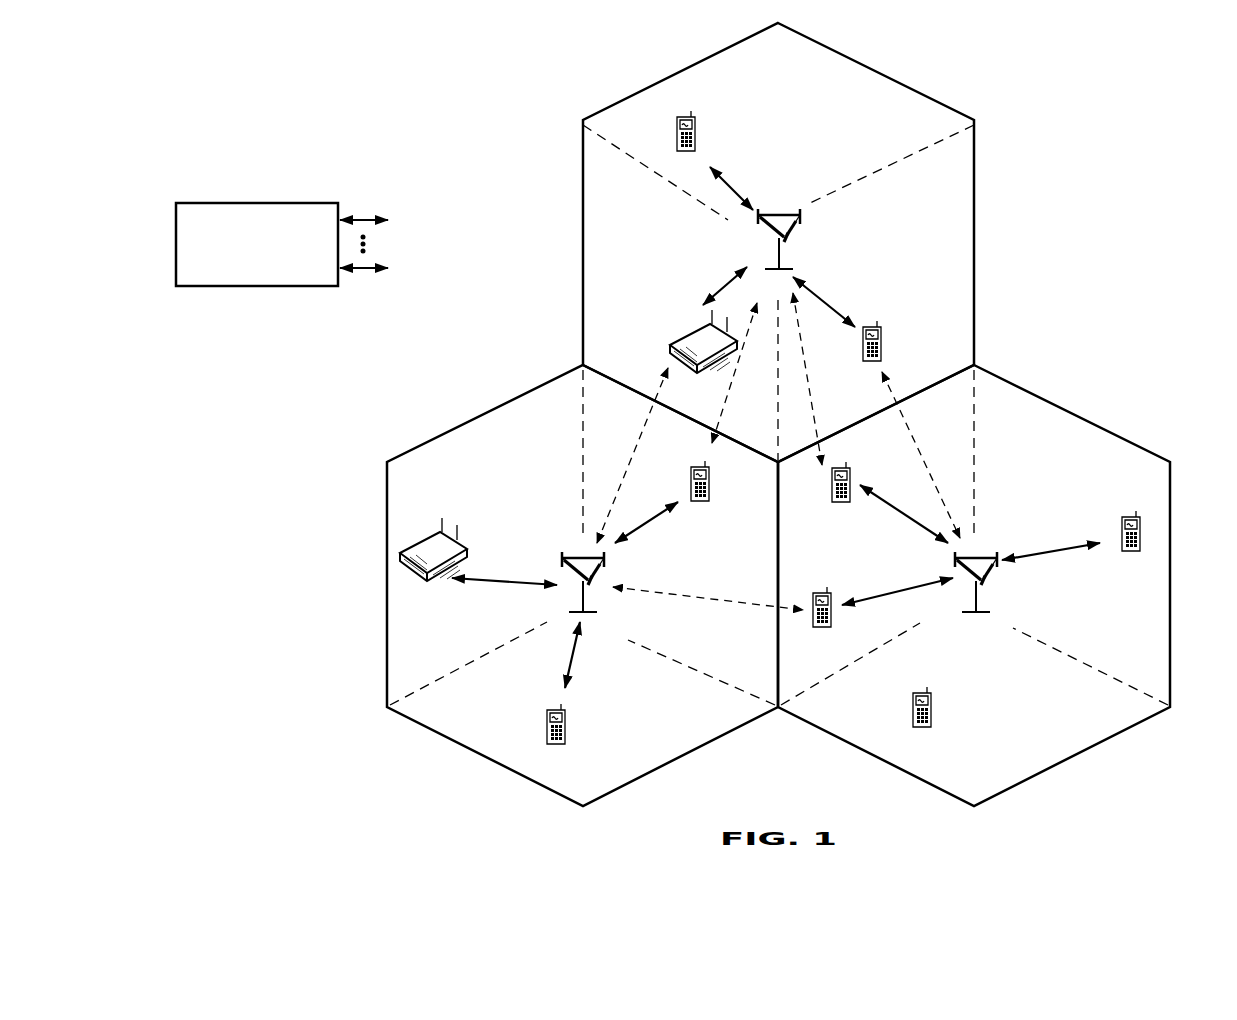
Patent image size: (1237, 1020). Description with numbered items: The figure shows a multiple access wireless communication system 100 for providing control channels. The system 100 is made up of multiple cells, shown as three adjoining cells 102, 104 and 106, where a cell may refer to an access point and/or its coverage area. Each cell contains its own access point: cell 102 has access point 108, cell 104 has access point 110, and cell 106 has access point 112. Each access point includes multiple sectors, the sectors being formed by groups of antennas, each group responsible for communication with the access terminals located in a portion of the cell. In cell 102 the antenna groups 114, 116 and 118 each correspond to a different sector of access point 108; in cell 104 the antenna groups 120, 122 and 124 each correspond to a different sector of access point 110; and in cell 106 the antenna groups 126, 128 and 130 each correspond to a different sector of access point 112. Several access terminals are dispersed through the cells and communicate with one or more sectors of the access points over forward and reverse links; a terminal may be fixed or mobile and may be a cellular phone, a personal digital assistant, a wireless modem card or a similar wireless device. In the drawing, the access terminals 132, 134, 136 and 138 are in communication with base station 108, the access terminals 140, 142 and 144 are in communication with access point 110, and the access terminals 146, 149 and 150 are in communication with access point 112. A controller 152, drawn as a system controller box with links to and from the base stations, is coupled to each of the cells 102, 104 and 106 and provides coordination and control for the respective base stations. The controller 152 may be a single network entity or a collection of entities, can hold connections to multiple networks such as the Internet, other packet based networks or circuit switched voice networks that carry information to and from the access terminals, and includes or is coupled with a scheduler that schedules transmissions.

The multiple access wireless communication system 100 is at (1095, 46).
The cell 102 is at (974, 585).
The cell 104 is at (582, 585).
The cell 106 is at (778, 242).
The access point 108 is at (982, 558).
The access point 110 is at (582, 552).
The access point 112 is at (773, 214).
The antenna group 114 is at (985, 586).
The antenna group 116 is at (994, 569).
The antenna group 118 is at (957, 563).
The antenna group 120 is at (599, 567).
The antenna group 122 is at (566, 561).
The antenna group 124 is at (594, 586).
The antenna group 126 is at (787, 248).
The antenna group 128 is at (797, 230).
The antenna group 130 is at (758, 225).
The access terminal 132 is at (828, 593).
The access terminal 134 is at (1136, 517).
The access terminal 136 is at (927, 693).
The access terminal 138 is at (844, 468).
The access terminal 140 is at (561, 745).
The access terminal 142 is at (705, 503).
The access terminal 144 is at (416, 540).
The access terminal 146 is at (692, 117).
The access terminal 149 is at (698, 332).
The access terminal 150 is at (876, 327).
The controller 152 is at (290, 203).